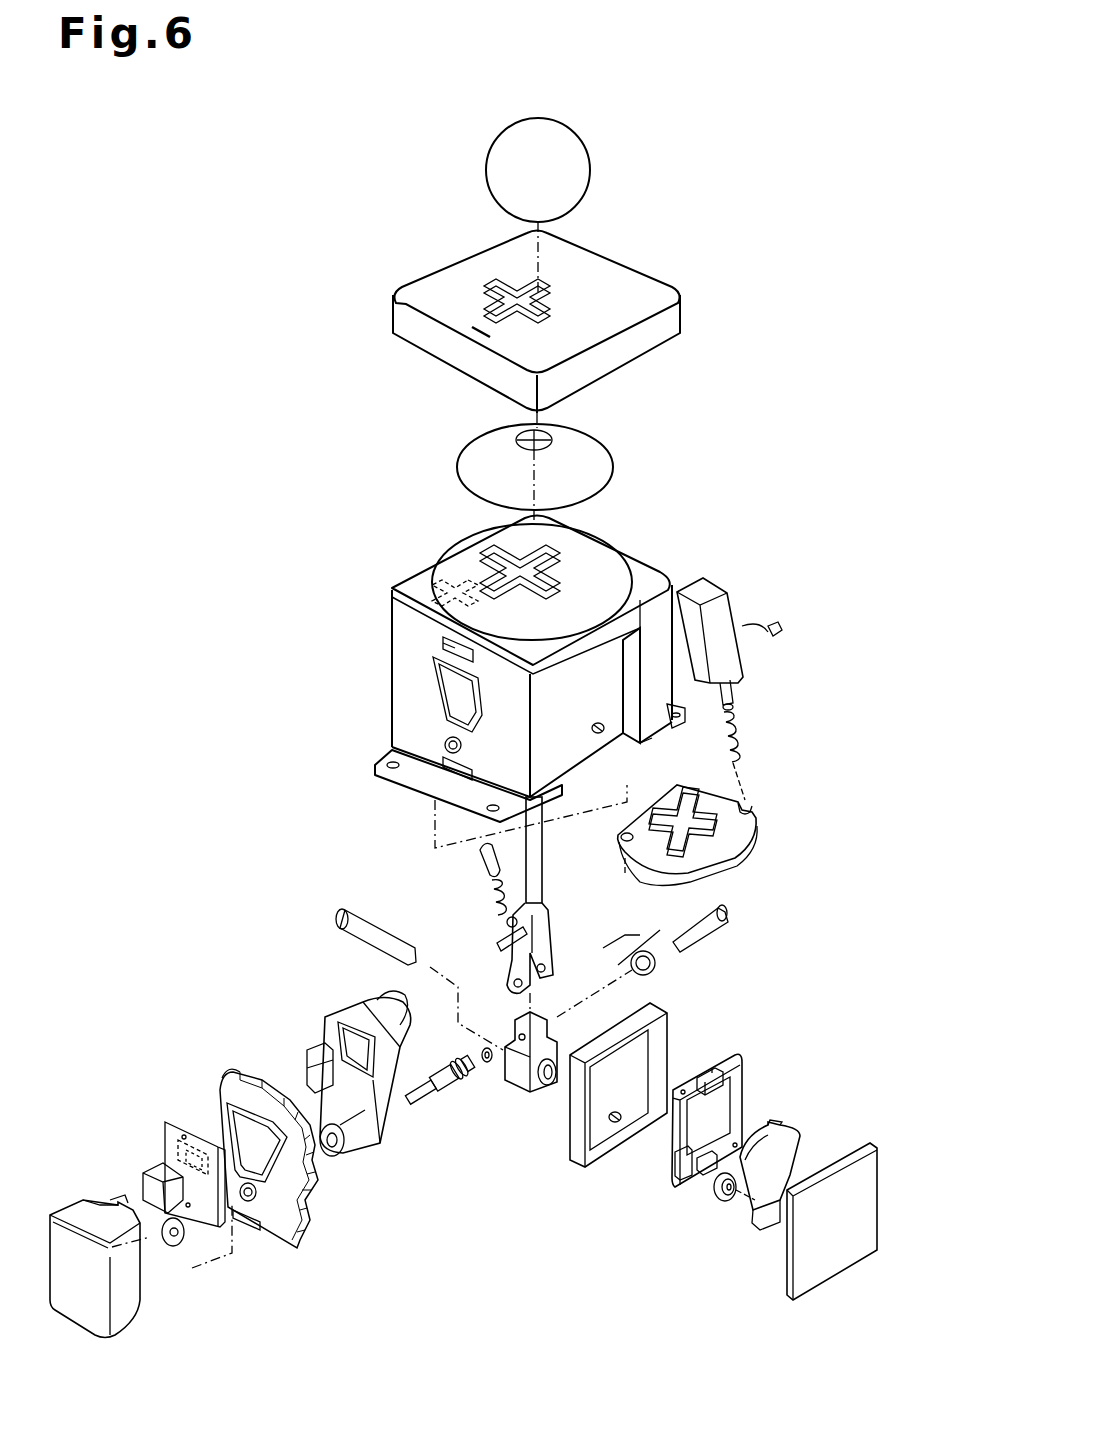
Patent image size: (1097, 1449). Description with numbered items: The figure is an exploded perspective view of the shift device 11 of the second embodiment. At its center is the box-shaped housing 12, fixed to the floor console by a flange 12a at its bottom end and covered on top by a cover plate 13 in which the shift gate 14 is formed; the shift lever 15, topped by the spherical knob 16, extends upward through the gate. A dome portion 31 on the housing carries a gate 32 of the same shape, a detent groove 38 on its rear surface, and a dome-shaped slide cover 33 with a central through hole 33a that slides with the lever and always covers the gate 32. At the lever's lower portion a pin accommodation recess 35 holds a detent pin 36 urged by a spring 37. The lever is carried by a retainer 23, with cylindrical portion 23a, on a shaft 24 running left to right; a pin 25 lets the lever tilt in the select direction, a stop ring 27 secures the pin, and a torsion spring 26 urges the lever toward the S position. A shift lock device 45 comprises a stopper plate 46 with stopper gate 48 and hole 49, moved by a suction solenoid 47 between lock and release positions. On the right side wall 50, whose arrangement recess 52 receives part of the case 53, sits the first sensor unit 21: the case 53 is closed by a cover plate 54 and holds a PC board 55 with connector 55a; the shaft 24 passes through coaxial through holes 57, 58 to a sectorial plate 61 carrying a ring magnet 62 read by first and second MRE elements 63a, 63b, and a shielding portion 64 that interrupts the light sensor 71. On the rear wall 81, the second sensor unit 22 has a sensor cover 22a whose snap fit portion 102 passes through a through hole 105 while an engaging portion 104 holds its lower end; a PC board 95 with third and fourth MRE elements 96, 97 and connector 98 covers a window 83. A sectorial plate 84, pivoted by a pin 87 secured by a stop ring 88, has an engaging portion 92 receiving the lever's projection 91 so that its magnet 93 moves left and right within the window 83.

The shift device 11 is at (266, 219).
The housing 12 is at (382, 664).
The flange 12a is at (380, 765).
The cover plate 13 is at (402, 322).
The shift gate 14 is at (490, 283).
The shift lever 15 is at (545, 845).
The knob 16 is at (508, 142).
The first sensor unit 21 is at (772, 1036).
The second sensor unit 22 is at (190, 1024).
The sensor cover 22a is at (130, 1320).
The retainer 23 is at (520, 1095).
The cylindrical portion 23a is at (545, 1085).
The shaft 24 is at (382, 927).
The pin 25 is at (710, 925).
The torsion spring 26 is at (660, 965).
The stop ring 27 is at (485, 1063).
The dome portion 31 is at (590, 545).
The gate 32 is at (487, 550).
The slide cover 33 is at (475, 450).
The through hole 33a is at (555, 440).
The pin accommodation recess 35 is at (506, 921).
The detent pin 36 is at (485, 860).
The spring 37 is at (515, 890).
The detent groove 38 is at (440, 588).
The shift lock device 45 is at (790, 808).
The stopper plate 46 is at (728, 860).
The suction solenoid 47 is at (740, 665).
The stopper gate 48 is at (720, 838).
The hole 49 is at (628, 846).
The right side wall 50 is at (652, 740).
The arrangement recess 52 is at (630, 650).
The case 53 is at (573, 1150).
The cover plate 54 is at (870, 1150).
The PC board 55 is at (735, 1085).
The connector 55a is at (668, 1175).
The through hole 57 is at (600, 722).
The through hole 58 is at (615, 1125).
The sectorial plate 61 is at (782, 1157).
The magnet 62 is at (725, 1205).
The first MRE element 63a is at (705, 1178).
The second MRE element 63b is at (720, 1145).
The shielding portion 64 is at (782, 1130).
The light sensor 71 is at (712, 1068).
The rear wall 81 is at (395, 737).
The window 83 is at (445, 690).
The sectorial plate 84 is at (336, 998).
The pin 87 is at (450, 647).
The stop ring 88 is at (175, 1248).
The projection 91 is at (497, 945).
The engaging portion 92 is at (398, 1005).
The magnet 93 is at (308, 1050).
The PC board 95 is at (172, 1122).
The third MRE element 96 is at (177, 1140).
The fourth MRE element 97 is at (183, 1158).
The connector 98 is at (143, 1175).
The snap fit portion 102 is at (105, 1198).
The engaging portion 104 is at (450, 770).
The through hole 105 is at (233, 1072).